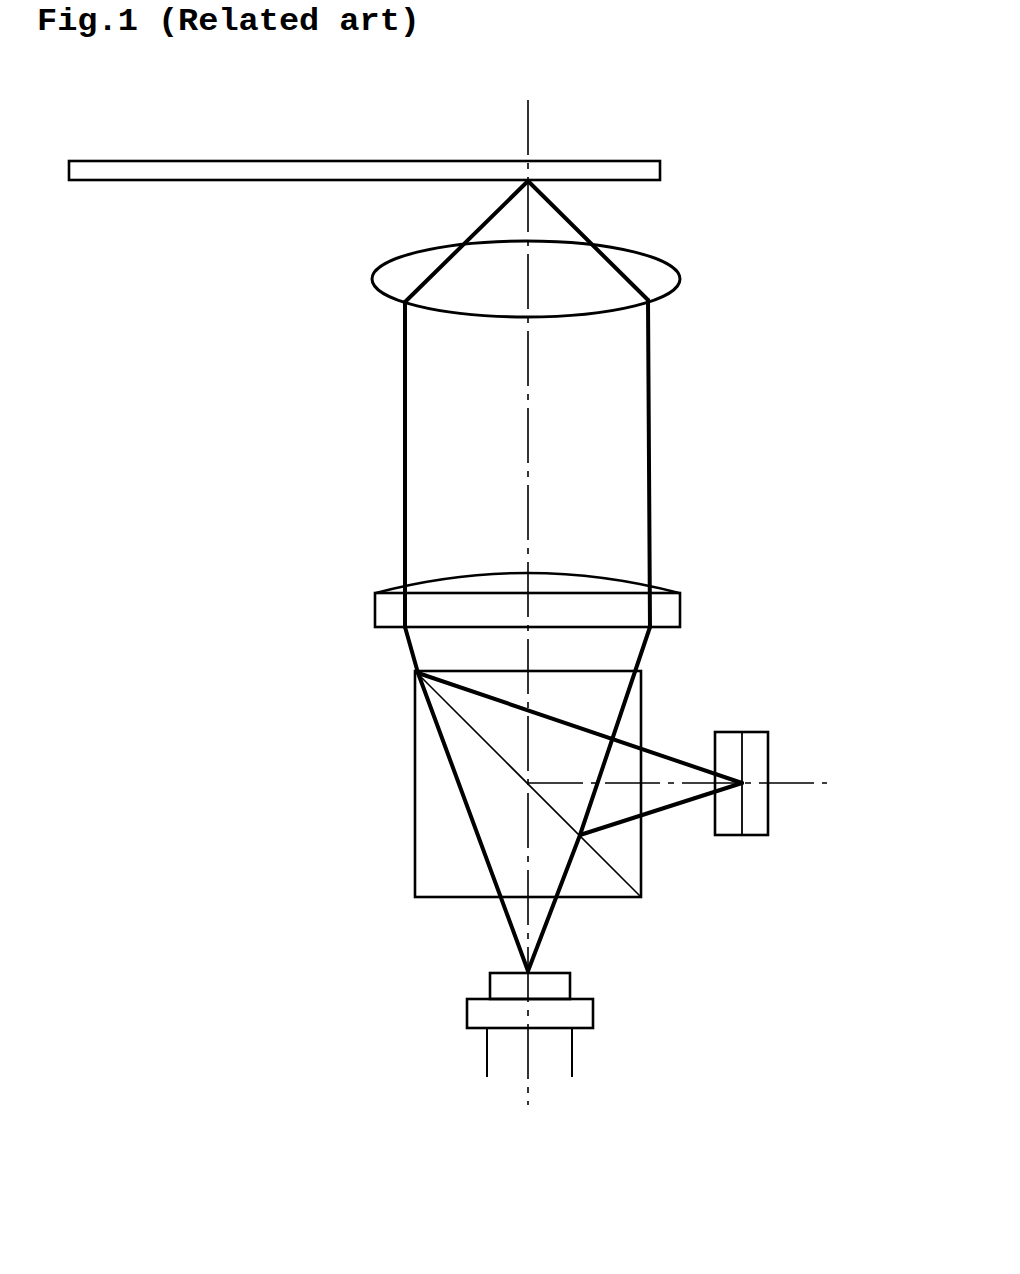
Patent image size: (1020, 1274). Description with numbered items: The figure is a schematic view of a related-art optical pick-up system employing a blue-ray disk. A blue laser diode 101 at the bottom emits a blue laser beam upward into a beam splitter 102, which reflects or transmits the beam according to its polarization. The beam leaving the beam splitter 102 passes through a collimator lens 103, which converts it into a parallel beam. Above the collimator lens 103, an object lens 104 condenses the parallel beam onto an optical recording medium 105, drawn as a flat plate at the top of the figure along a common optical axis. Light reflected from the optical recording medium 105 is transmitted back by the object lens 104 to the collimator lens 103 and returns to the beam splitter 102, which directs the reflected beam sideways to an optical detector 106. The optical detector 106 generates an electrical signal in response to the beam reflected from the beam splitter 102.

The blue laser diode 101 is at (583, 1018).
The beam splitter 102 is at (415, 803).
The collimator lens 103 is at (375, 610).
The object lens 104 is at (637, 252).
The optical recording medium 105 is at (641, 161).
The optical detector 106 is at (757, 818).